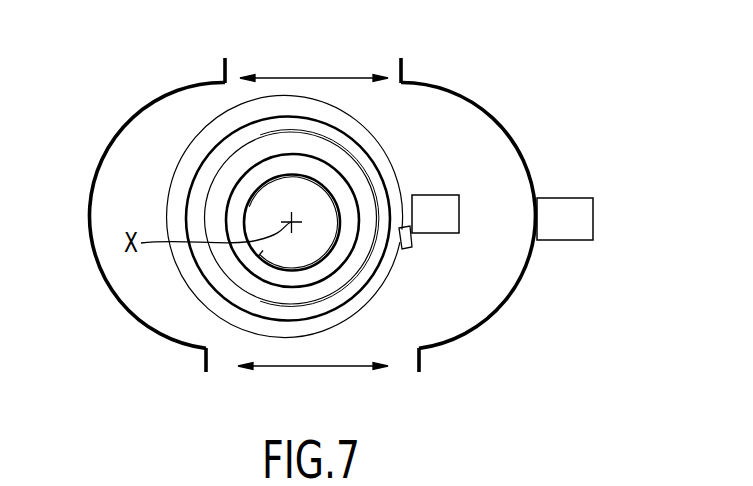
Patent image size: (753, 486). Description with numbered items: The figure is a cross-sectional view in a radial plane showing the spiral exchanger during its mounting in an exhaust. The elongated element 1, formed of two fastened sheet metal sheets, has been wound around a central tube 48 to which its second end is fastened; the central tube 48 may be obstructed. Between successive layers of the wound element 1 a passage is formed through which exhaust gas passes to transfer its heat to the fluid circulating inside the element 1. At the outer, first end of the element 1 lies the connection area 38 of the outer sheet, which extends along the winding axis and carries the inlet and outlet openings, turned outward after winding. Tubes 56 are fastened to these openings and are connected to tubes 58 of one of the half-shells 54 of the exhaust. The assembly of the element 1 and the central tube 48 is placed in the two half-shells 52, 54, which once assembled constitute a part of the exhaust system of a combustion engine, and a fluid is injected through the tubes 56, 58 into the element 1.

The element of an exchanger 1 is at (288, 108).
The connection area 38 is at (403, 250).
The central tube 48 is at (323, 215).
The half-shell 52 is at (151, 105).
The half-shell 54 is at (514, 139).
The tubes 56 is at (442, 205).
The tubes 58 is at (577, 234).